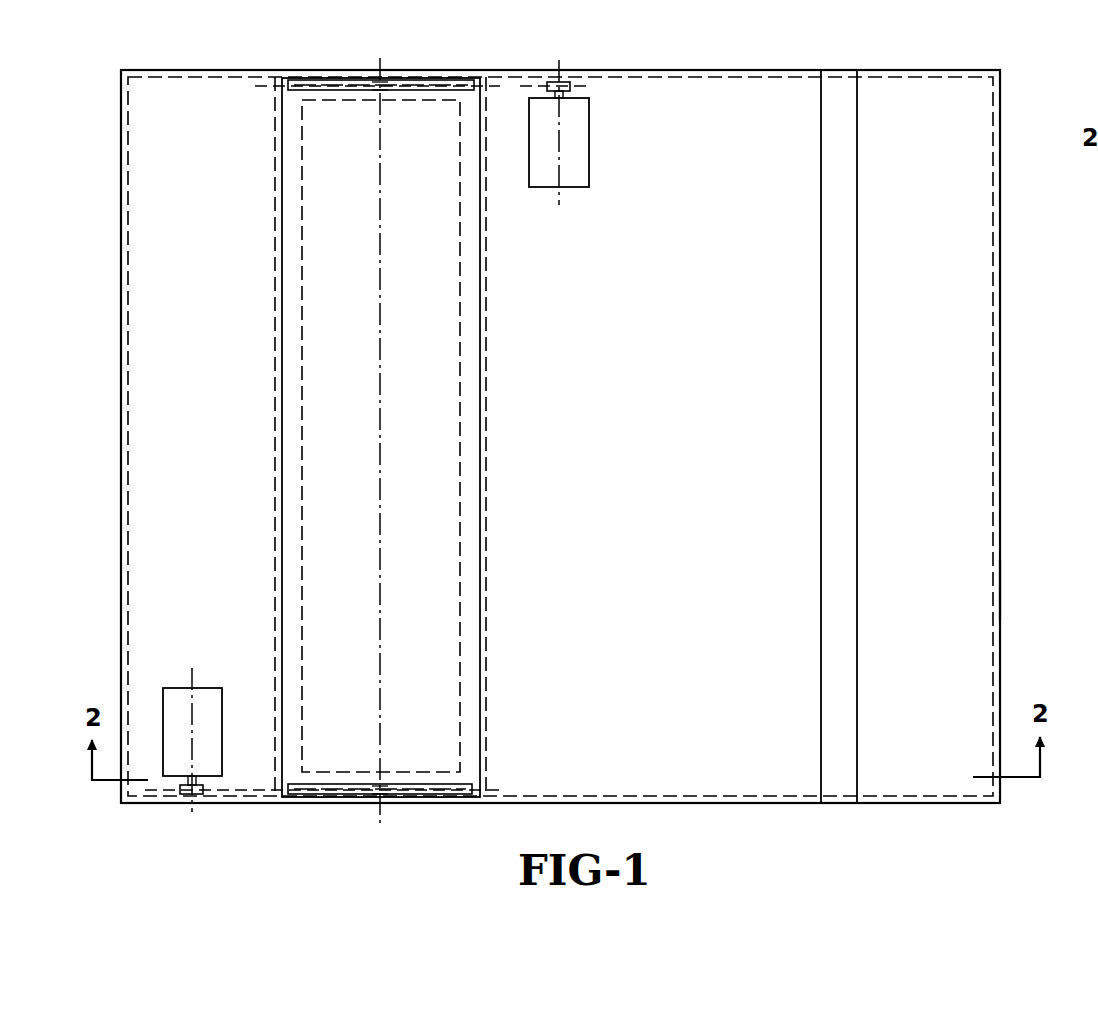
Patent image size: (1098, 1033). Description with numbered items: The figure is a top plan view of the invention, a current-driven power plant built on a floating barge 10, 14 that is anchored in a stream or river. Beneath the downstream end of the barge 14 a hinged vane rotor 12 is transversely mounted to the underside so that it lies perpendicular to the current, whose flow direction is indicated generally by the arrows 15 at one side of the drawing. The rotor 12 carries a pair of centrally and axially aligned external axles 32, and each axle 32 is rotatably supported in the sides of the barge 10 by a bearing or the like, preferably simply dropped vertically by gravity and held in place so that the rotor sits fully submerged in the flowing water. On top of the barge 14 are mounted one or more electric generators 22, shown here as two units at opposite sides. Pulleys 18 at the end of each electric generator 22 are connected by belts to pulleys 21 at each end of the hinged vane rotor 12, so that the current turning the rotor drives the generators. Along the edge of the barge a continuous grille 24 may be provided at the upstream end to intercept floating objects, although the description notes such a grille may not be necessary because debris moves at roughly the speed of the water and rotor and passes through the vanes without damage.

The barge 10 is at (243, 58).
The hinged vane rotor 12 is at (416, 385).
The barge 14 is at (898, 100).
The arrows 15 is at (1010, 340).
The pulleys 18 is at (562, 86).
The pulleys 21 is at (425, 82).
The electric generators 22 is at (575, 162).
The continuous grille 24 is at (994, 598).
The external axle 32 is at (378, 84).